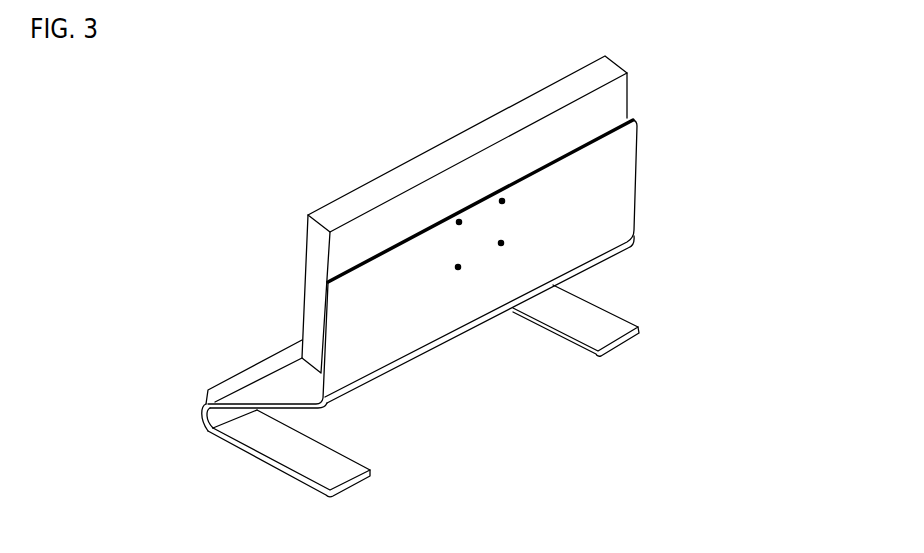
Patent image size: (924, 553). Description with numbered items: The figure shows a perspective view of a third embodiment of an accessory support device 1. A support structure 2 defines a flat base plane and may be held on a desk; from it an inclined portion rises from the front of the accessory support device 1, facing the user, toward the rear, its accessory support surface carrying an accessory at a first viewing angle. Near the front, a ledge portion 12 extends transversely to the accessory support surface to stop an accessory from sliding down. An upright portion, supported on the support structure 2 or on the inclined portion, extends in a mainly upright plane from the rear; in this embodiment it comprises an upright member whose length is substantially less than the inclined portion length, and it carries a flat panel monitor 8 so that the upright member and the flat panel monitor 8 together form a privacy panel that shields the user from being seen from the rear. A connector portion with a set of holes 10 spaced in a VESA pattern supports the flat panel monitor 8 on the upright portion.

The accessory support device 1 is at (148, 287).
The support structure 2 is at (291, 454).
The flat panel monitor 8 is at (605, 105).
The holes 10 is at (507, 243).
The ledge portion 12 is at (277, 366).